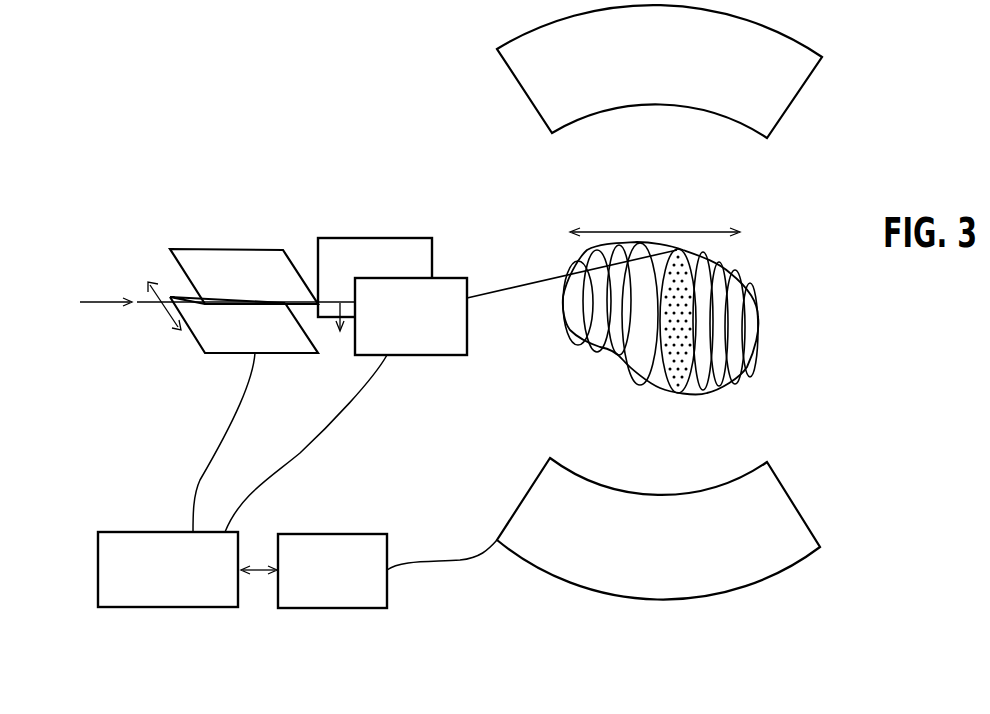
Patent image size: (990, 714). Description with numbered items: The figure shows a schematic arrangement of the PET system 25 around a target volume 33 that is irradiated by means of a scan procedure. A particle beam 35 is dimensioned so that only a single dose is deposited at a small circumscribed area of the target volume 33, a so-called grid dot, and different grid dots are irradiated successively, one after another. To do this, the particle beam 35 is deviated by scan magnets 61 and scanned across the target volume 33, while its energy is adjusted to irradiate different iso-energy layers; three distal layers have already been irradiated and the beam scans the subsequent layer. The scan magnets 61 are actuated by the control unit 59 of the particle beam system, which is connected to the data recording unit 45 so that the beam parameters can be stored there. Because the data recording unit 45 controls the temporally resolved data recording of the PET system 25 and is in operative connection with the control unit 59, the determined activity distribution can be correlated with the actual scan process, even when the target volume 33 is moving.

The PET system 25 is at (448, 588).
The scan magnets 61 is at (323, 219).
The particle beam 35 is at (530, 282).
The target volume 33 is at (760, 325).
The control unit 59 is at (172, 594).
The data recording unit 45 is at (337, 597).